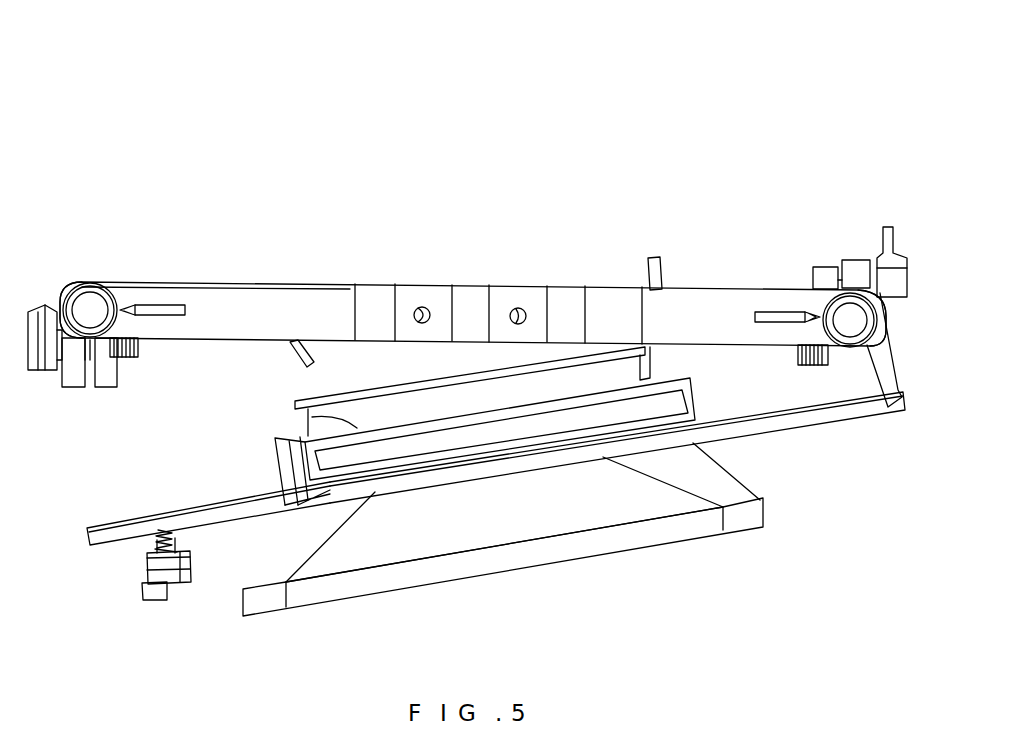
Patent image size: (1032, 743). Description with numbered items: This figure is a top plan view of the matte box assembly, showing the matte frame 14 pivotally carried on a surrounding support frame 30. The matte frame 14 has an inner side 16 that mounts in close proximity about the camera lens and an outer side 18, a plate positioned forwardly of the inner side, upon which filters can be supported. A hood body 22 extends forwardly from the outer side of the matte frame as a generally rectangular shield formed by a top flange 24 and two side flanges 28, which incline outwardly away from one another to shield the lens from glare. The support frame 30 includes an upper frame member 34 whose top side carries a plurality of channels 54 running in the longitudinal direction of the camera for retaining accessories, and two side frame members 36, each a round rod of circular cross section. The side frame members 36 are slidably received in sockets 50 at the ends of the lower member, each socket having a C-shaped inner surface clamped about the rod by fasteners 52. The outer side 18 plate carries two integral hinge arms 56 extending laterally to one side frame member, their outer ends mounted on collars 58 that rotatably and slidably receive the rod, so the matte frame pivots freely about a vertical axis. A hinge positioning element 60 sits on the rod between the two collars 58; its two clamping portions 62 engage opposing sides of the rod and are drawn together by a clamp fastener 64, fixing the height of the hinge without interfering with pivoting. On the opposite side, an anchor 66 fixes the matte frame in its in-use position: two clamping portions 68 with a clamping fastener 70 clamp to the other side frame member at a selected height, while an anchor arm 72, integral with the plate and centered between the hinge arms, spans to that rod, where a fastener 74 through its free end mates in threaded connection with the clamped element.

The matte frame 14 is at (416, 495).
The inner side 16 is at (307, 423).
The outer side 18 is at (525, 465).
The hood body 22 is at (537, 562).
The top flange 24 is at (570, 548).
The side flanges 28 is at (270, 562).
The support frame 30 is at (218, 282).
The upper frame member 34 is at (266, 286).
The side frame members 36 is at (90, 310).
The sockets 50 is at (95, 300).
The fasteners 52 is at (135, 358).
The channels 54 is at (372, 305).
The hinge arms 56 is at (793, 415).
The collars 58 is at (872, 417).
The hinge positioning element 60 is at (837, 233).
The clamping portions 62 is at (825, 273).
The clamp fastener 64 is at (895, 237).
The anchor 66 is at (93, 432).
The clamping portions 68 is at (70, 390).
The clamping fastener 70 is at (40, 372).
The anchor arm 72 is at (221, 512).
The fastener 74 is at (148, 568).